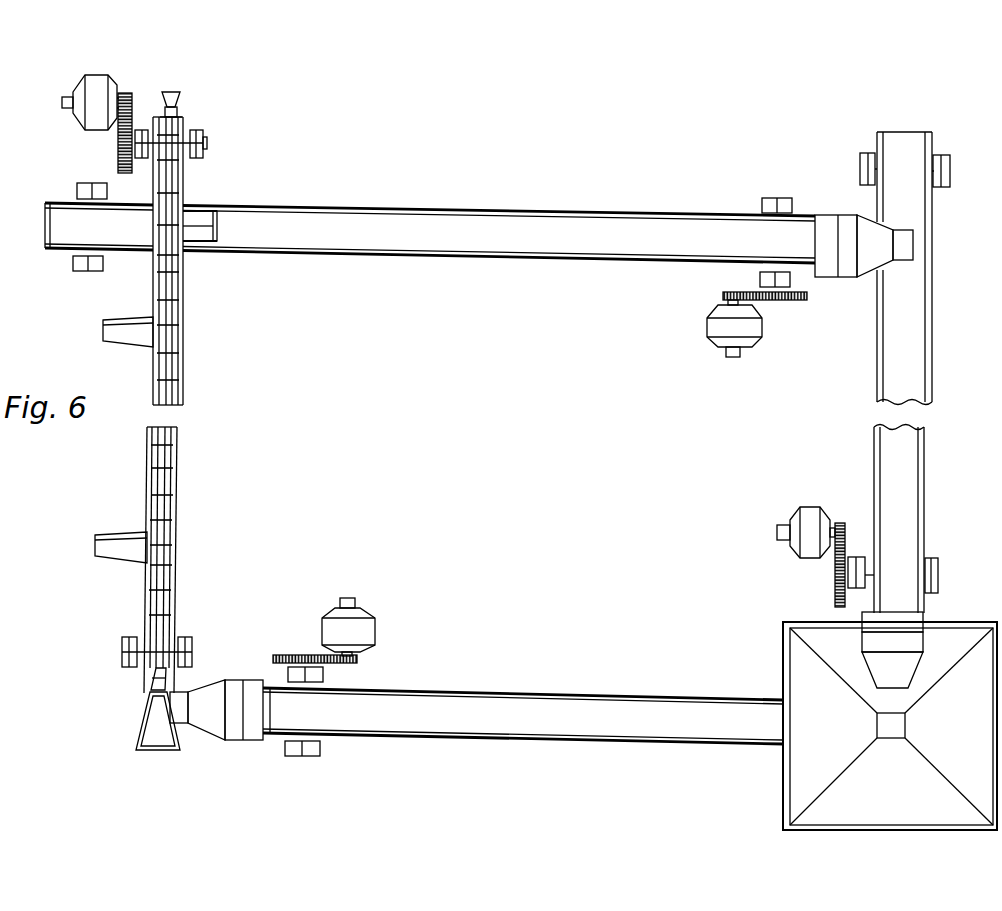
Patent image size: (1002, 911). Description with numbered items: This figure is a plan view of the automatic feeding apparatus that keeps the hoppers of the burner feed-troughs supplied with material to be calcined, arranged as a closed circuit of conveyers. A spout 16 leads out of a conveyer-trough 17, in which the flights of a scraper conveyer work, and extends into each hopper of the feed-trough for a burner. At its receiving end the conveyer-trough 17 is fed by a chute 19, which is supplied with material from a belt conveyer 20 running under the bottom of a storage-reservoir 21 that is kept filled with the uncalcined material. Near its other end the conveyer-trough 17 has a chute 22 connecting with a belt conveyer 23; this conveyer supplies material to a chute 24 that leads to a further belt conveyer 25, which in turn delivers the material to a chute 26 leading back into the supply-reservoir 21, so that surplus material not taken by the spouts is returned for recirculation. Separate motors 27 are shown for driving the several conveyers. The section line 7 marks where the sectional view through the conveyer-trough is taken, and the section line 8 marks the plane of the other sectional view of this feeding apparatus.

The section line 7 7 is at (176, 92).
The section line 8 8 is at (200, 300).
The spout 16 is at (124, 352).
The conveyer-trough 17 is at (150, 481).
The chute 19 is at (178, 760).
The belt conveyer 20 is at (523, 722).
The storage-reservoir 21 is at (890, 726).
The chute 22 is at (200, 224).
The belt conveyer 23 is at (430, 235).
The chute 24 is at (864, 236).
The belt conveyer 25 is at (899, 382).
The chute 26 is at (922, 648).
The motor 27 is at (453, 378).